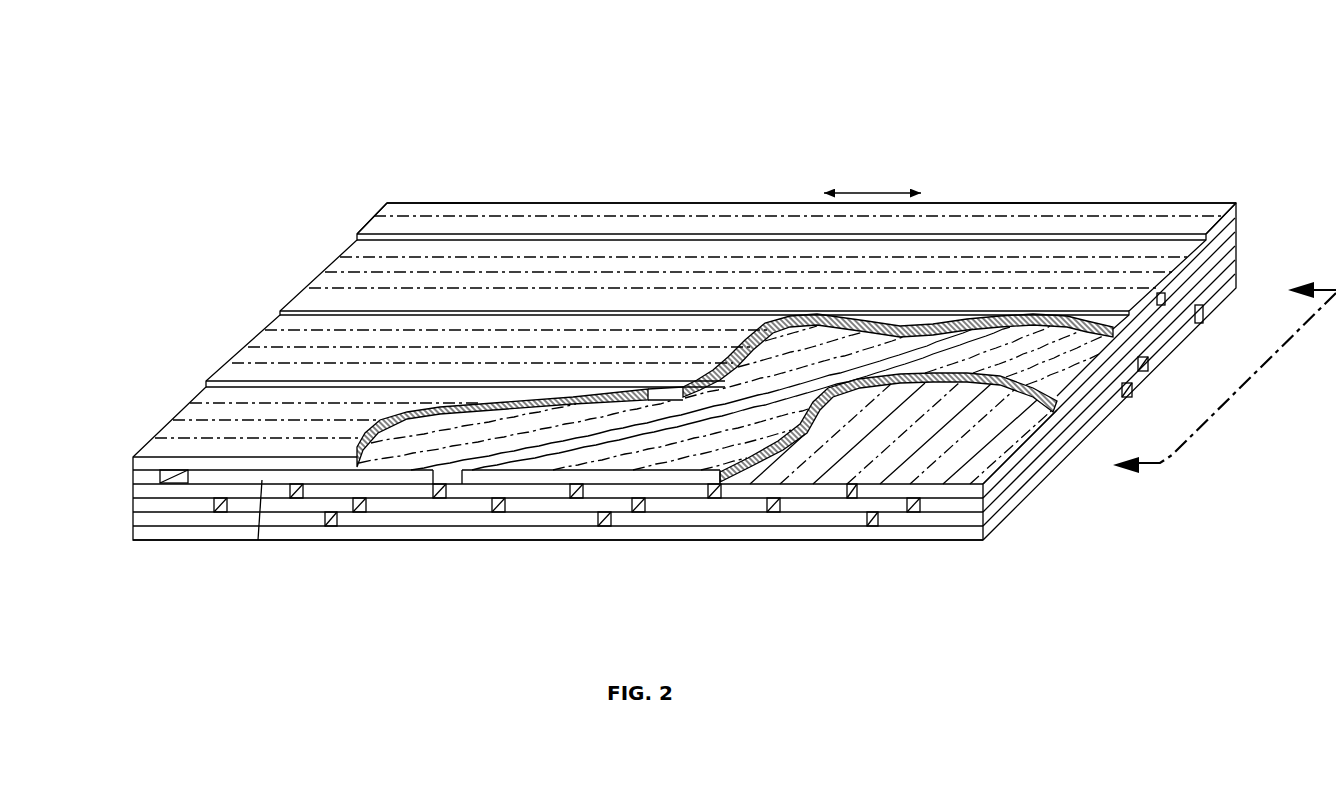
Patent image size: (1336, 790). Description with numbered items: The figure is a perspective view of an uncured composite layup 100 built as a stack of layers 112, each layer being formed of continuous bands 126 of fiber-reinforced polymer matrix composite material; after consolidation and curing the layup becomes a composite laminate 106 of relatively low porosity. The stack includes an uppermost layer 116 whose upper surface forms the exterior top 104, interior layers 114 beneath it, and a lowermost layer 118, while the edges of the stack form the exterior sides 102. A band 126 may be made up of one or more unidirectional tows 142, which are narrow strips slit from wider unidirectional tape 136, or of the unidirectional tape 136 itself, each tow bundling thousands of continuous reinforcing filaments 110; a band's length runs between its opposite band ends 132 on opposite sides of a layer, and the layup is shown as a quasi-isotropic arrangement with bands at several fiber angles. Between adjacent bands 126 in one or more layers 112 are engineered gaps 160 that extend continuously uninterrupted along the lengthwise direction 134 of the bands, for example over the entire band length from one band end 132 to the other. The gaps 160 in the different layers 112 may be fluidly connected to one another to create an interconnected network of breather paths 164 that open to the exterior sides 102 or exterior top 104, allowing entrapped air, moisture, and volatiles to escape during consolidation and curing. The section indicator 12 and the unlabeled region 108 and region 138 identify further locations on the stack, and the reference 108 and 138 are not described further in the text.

The composite layup 100 is at (256, 106).
The exterior side 102 is at (1239, 234).
The exterior top 104 is at (1089, 199).
The composite laminate 106 is at (663, 202).
The second layer 108 is at (348, 271).
The reinforcing filaments 110 is at (260, 351).
The layers 112 is at (131, 525).
The interior layers 114 is at (293, 537).
The uppermost layer 116 is at (176, 450).
The lowermost layer 118 is at (380, 534).
The bands 126 is at (448, 349).
The band ends 132 is at (382, 202).
The lengthwise direction 134 is at (870, 192).
The unidirectional tape 136 is at (451, 202).
The second region 138 is at (1011, 202).
The unidirectional tows 142 is at (977, 474).
The engineered gaps 160 is at (353, 233).
The breather paths 164 is at (706, 472).
The section line 12- 12 is at (1209, 374).